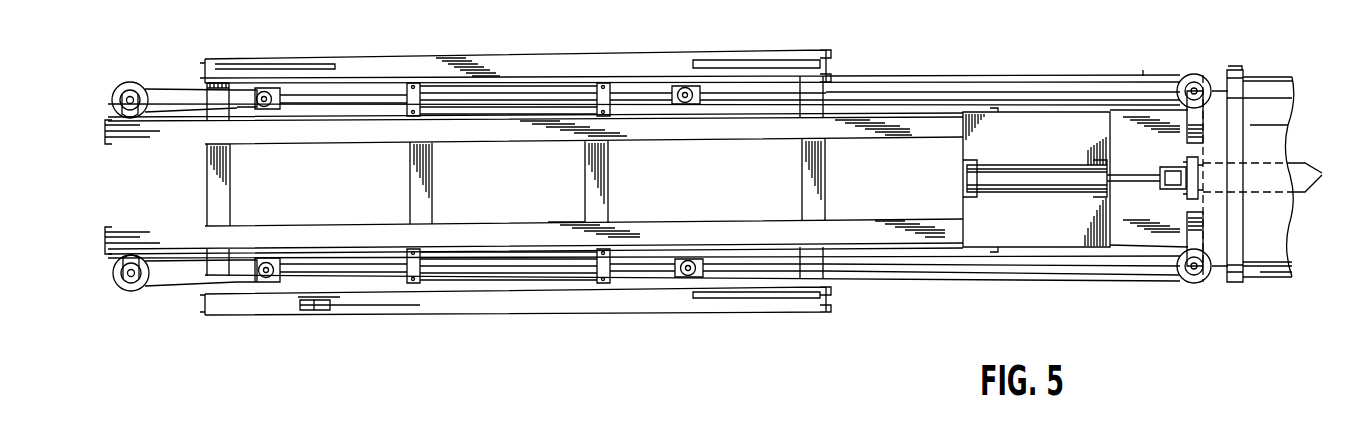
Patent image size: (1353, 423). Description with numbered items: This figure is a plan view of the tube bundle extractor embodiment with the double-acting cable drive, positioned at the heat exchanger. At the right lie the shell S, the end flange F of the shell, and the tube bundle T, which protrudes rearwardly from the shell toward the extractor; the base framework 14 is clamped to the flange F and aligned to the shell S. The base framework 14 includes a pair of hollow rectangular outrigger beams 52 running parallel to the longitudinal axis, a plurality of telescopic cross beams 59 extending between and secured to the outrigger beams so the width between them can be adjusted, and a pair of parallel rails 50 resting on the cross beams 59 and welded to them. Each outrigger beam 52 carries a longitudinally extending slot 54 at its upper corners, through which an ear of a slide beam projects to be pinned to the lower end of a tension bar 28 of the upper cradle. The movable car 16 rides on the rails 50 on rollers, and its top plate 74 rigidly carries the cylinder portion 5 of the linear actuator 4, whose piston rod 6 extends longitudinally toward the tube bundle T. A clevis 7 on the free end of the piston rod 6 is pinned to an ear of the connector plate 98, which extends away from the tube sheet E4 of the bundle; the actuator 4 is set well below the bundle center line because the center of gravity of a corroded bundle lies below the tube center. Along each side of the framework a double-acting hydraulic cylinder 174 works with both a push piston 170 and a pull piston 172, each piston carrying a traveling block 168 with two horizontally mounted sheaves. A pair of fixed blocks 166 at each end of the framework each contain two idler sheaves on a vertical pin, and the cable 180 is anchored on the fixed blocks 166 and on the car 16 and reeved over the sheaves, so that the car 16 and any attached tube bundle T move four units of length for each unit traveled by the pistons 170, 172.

The linear actuator 4 is at (1041, 153).
The cylinder portion 5 is at (1007, 193).
The piston rod 6 is at (1117, 173).
The clevis 7 is at (1168, 167).
The base framework 14 is at (804, 328).
The movable car 16 is at (1015, 64).
The tension bars 28 is at (275, 65).
The rails 50 is at (695, 219).
The outrigger beams 52 is at (577, 52).
The slot 54 is at (727, 303).
The cross beams 59 is at (585, 182).
The top plate 74 is at (1053, 239).
The connector plate 98 is at (1196, 200).
The fixed blocks 166 is at (125, 292).
The traveling block 168 is at (648, 90).
The push piston 170 is at (642, 276).
The pull piston 172 is at (380, 278).
The double-acting hydraulic cylinder 174 is at (470, 88).
The cable 180 is at (162, 88).
The tube sheet E4 is at (1143, 70).
The tube bundle T is at (1271, 178).
The end flange F is at (1233, 283).
The shell S is at (1270, 268).